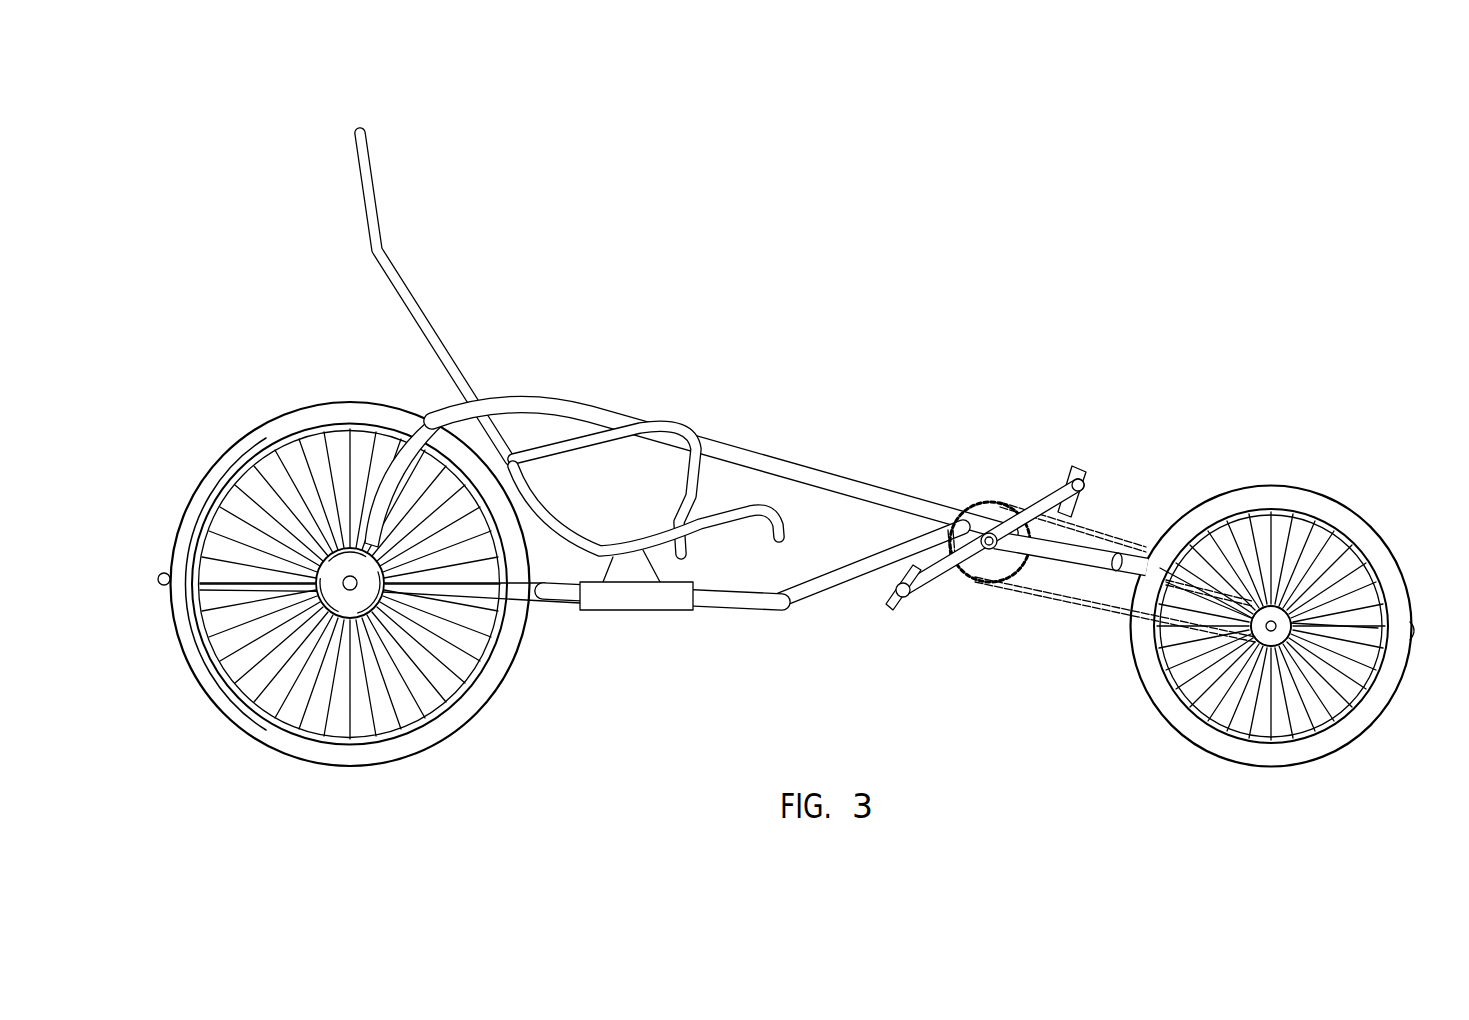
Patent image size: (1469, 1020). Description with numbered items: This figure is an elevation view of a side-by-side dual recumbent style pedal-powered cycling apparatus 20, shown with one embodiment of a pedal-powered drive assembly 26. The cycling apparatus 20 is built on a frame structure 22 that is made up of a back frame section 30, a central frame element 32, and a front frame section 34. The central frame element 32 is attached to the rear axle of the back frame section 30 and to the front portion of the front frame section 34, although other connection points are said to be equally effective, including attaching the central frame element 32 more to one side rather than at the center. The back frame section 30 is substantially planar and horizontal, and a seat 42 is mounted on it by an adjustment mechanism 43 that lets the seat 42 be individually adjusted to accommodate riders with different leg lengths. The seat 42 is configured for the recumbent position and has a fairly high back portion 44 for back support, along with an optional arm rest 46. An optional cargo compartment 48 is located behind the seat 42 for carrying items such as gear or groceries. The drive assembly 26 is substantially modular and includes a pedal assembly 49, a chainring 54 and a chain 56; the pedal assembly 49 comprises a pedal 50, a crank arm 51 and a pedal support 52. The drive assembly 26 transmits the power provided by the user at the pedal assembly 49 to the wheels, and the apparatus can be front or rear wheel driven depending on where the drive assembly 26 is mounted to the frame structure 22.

The cycling apparatus 20 is at (1019, 249).
The frame structure 22 is at (858, 668).
The drive assembly 26 is at (1021, 452).
The back frame section 30 is at (726, 624).
The central frame element 32 is at (845, 463).
The front frame section 34 is at (1363, 640).
The seat 42 is at (478, 247).
The adjustment mechanism 43 is at (633, 580).
The back portion 44 is at (362, 187).
The arm rest 46 is at (652, 438).
The cargo compartment 48 is at (165, 571).
The pedal assembly 49 is at (1090, 510).
The pedal 50 is at (1087, 474).
The crank arm 51 is at (917, 588).
The pedal support 52 is at (1092, 553).
The chainring 54 is at (988, 568).
The chain 56 is at (1052, 600).